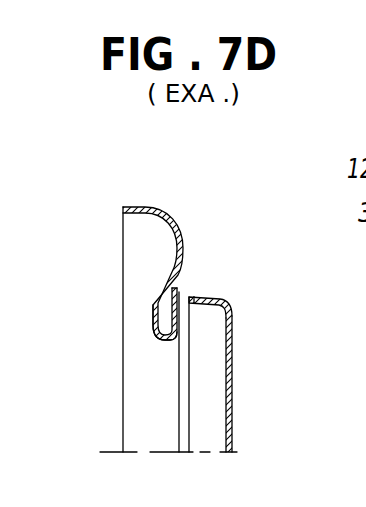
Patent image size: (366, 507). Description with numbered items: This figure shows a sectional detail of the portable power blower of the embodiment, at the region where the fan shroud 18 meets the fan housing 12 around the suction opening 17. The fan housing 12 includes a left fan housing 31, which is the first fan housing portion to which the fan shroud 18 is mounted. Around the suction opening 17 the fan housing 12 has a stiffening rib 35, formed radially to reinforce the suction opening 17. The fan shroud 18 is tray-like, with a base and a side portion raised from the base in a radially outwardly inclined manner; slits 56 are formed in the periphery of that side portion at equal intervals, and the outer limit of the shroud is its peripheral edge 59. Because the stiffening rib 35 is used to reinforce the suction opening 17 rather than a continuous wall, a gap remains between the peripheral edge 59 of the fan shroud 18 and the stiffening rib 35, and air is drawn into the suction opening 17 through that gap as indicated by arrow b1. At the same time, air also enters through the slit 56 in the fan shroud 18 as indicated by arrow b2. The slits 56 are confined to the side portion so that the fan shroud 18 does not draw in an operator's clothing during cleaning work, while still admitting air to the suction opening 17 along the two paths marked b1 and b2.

The fan housing 12 is at (135, 180).
The left fan housing 31 is at (120, 232).
The stiffening rib 35 is at (168, 312).
The peripheral edge 59 is at (180, 289).
The suction opening 17 is at (168, 410).
The slit 56 is at (215, 298).
The fan shroud 18 is at (240, 347).
The arrow b1 is at (189, 283).
The arrow b2 is at (198, 332).